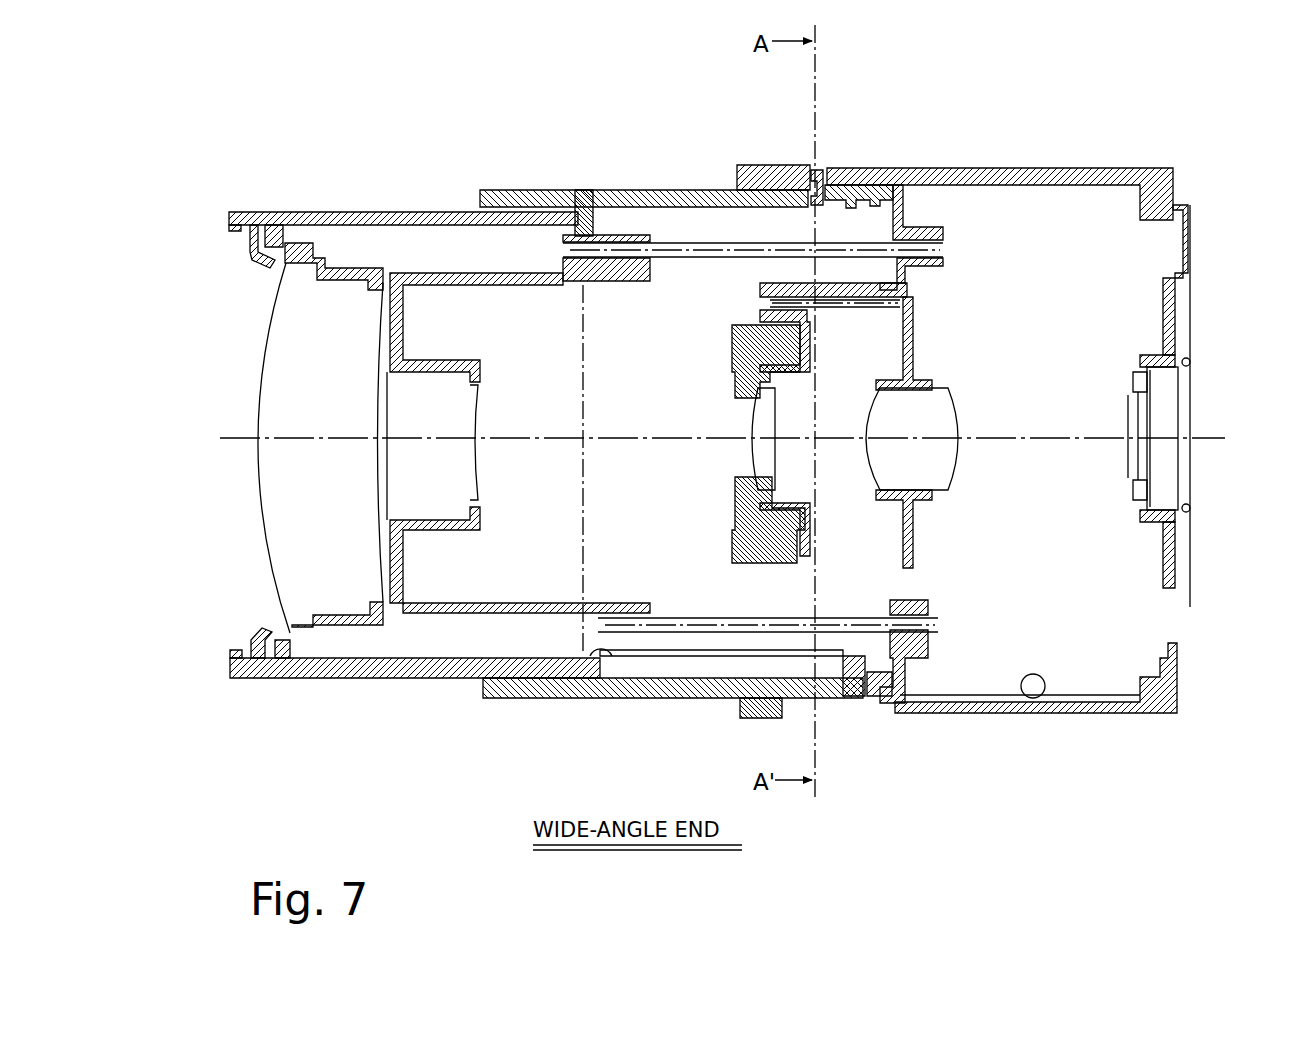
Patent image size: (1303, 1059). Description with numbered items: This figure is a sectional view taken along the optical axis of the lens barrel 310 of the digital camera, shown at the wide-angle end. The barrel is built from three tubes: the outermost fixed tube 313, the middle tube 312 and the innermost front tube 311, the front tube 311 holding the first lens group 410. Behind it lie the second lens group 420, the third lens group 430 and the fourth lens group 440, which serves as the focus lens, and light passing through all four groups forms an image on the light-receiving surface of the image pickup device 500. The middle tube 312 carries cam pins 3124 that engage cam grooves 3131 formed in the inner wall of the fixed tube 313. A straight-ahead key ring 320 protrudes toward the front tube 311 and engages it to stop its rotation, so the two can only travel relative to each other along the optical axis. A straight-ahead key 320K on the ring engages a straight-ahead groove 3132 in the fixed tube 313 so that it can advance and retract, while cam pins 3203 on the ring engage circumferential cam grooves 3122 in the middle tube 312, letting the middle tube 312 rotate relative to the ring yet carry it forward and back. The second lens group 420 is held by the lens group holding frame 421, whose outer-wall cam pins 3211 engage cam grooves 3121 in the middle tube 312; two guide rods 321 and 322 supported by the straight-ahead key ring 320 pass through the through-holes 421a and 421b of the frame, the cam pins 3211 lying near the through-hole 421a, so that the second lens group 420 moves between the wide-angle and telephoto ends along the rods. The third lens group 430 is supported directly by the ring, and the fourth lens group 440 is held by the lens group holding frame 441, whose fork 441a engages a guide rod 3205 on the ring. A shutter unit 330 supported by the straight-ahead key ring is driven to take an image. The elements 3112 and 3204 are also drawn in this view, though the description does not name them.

The lens barrel 310 is at (712, 114).
The front tube 311 is at (331, 210).
The first barrel lower wall 3112 is at (412, 680).
The middle tube 312 is at (640, 188).
The cam grooves 3121 is at (603, 188).
The cam pins 3211 is at (598, 218).
The cam pins 3124 is at (808, 183).
The fixed tube 313 is at (1065, 167).
The cam grooves 3131 is at (840, 185).
The straight-ahead groove 3132 is at (1033, 698).
The straight-ahead key ring 320 is at (945, 250).
The straight-ahead key 320K is at (905, 680).
The guide rod 321 is at (700, 256).
The guide rod 322 is at (822, 618).
The cam pins 3203 is at (843, 660).
The plate 3204 is at (668, 700).
The guide rod 3205 is at (838, 313).
The cam grooves 3122 is at (885, 700).
The shutter unit 330 is at (732, 366).
The first lens group 410 is at (285, 538).
The second lens group 420 is at (478, 478).
The lens group holding frame 421 is at (506, 287).
The through-hole 421a is at (652, 258).
The through-hole 421b is at (652, 612).
The third lens group 430 is at (755, 458).
The fourth lens group 440 is at (945, 469).
The lens group holding frame 441 is at (914, 335).
The fork 441a is at (910, 302).
The image pickup device 500 is at (1165, 385).